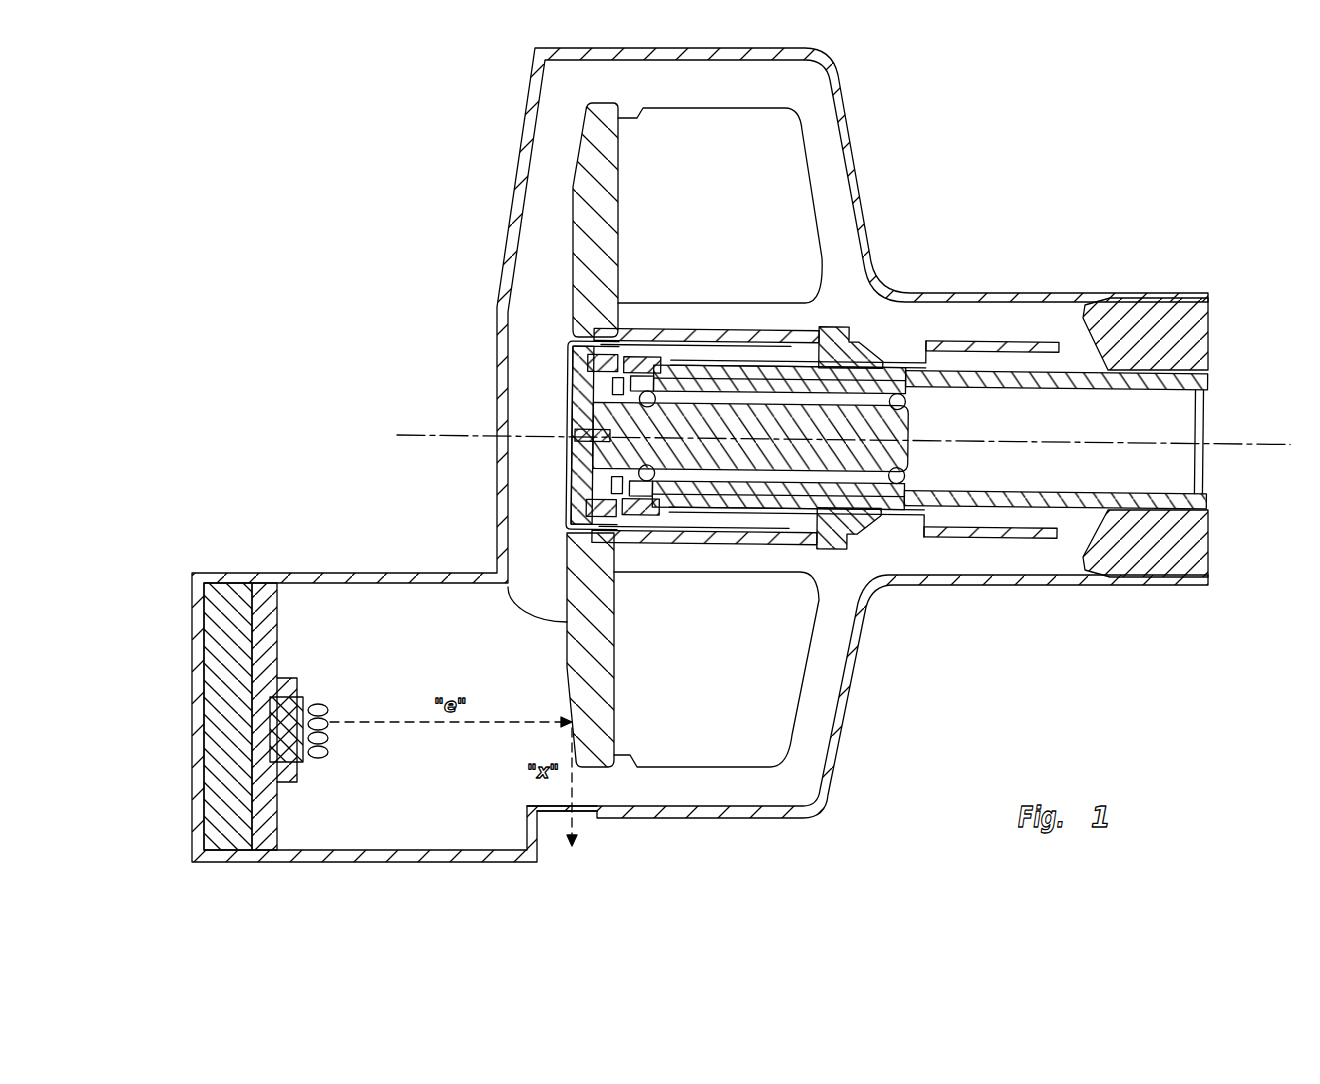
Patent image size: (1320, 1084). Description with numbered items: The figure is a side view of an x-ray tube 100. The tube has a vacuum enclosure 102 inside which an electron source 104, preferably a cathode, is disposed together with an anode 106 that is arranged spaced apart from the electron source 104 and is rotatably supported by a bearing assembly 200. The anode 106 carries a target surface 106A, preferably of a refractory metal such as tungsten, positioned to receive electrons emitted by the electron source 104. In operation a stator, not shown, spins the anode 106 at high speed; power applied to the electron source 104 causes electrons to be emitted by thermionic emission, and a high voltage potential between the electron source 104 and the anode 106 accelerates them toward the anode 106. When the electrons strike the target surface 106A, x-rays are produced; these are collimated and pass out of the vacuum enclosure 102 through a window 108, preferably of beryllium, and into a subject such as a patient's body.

The x-ray tube 100 is at (258, 168).
The vacuum enclosure 102 is at (497, 348).
The electron source 104 is at (330, 703).
The anode 106 is at (712, 740).
The target surface 106A is at (505, 578).
The window 108 is at (557, 812).
The bearing assembly 200 is at (847, 560).